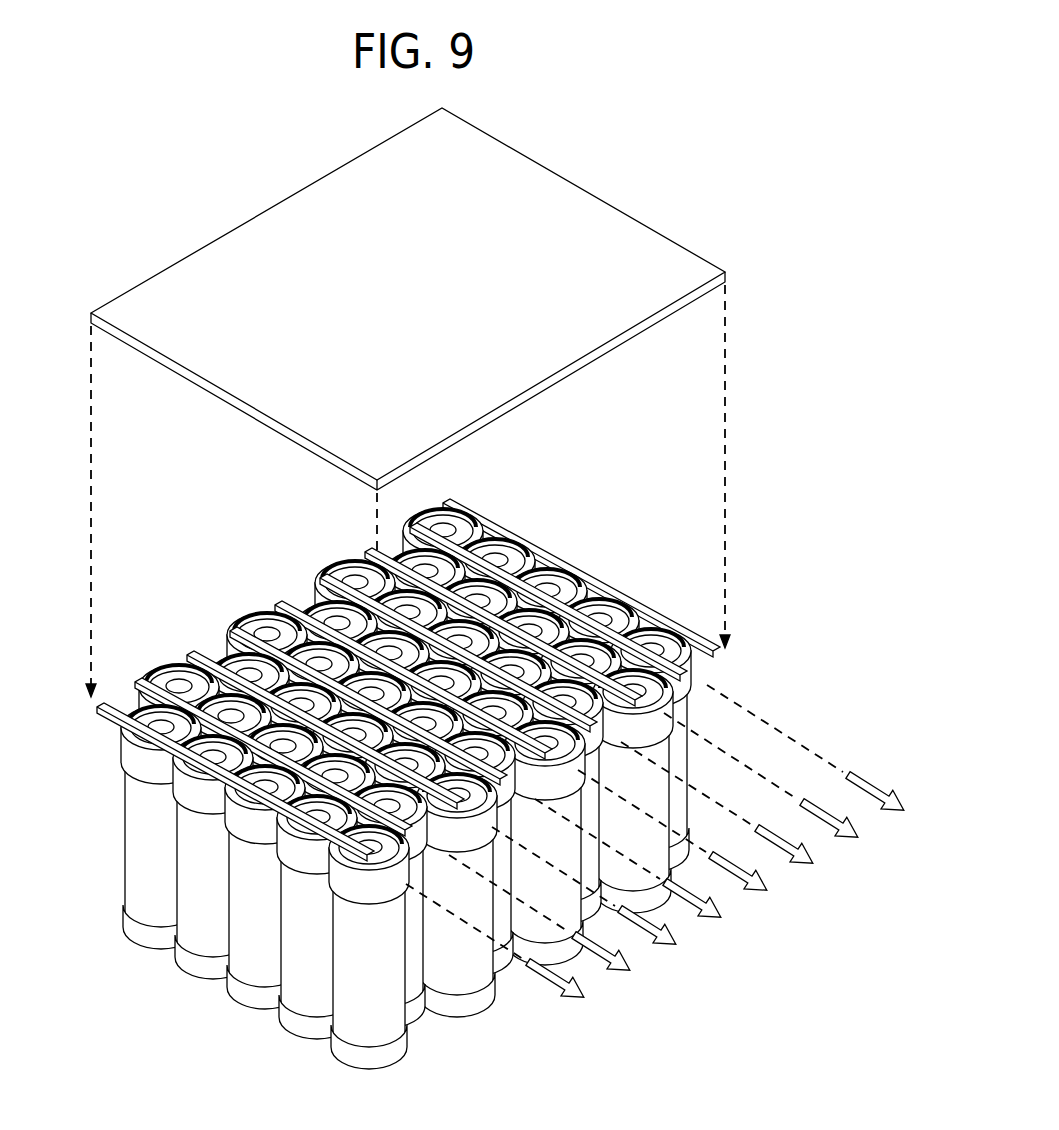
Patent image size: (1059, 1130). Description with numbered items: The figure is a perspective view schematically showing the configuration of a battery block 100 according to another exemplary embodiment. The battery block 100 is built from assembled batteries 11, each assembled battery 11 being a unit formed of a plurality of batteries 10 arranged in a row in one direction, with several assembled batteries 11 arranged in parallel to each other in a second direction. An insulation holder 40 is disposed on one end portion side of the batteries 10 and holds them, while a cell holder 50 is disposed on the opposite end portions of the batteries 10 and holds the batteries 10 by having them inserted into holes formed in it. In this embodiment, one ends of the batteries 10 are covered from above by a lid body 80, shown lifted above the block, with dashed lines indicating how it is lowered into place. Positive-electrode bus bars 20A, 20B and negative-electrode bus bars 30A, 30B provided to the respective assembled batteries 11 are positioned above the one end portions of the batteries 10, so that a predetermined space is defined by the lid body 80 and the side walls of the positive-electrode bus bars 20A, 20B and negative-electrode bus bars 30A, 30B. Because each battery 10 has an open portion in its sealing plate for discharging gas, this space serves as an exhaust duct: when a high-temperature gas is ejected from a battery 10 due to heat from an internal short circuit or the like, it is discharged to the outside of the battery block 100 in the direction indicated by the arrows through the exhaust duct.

The battery block 100 is at (696, 199).
The lid body 80 is at (285, 200).
The negative-electrode bus bar 30A is at (96, 712).
The negative-electrode bus bar 30B is at (143, 678).
The insulation holder 40 is at (124, 768).
The battery 10 is at (140, 845).
The cell holder 50 is at (135, 935).
The assembled battery 11 is at (367, 1012).
The positive-electrode bus bar 20A is at (539, 912).
The positive-electrode bus bar 20B is at (495, 930).